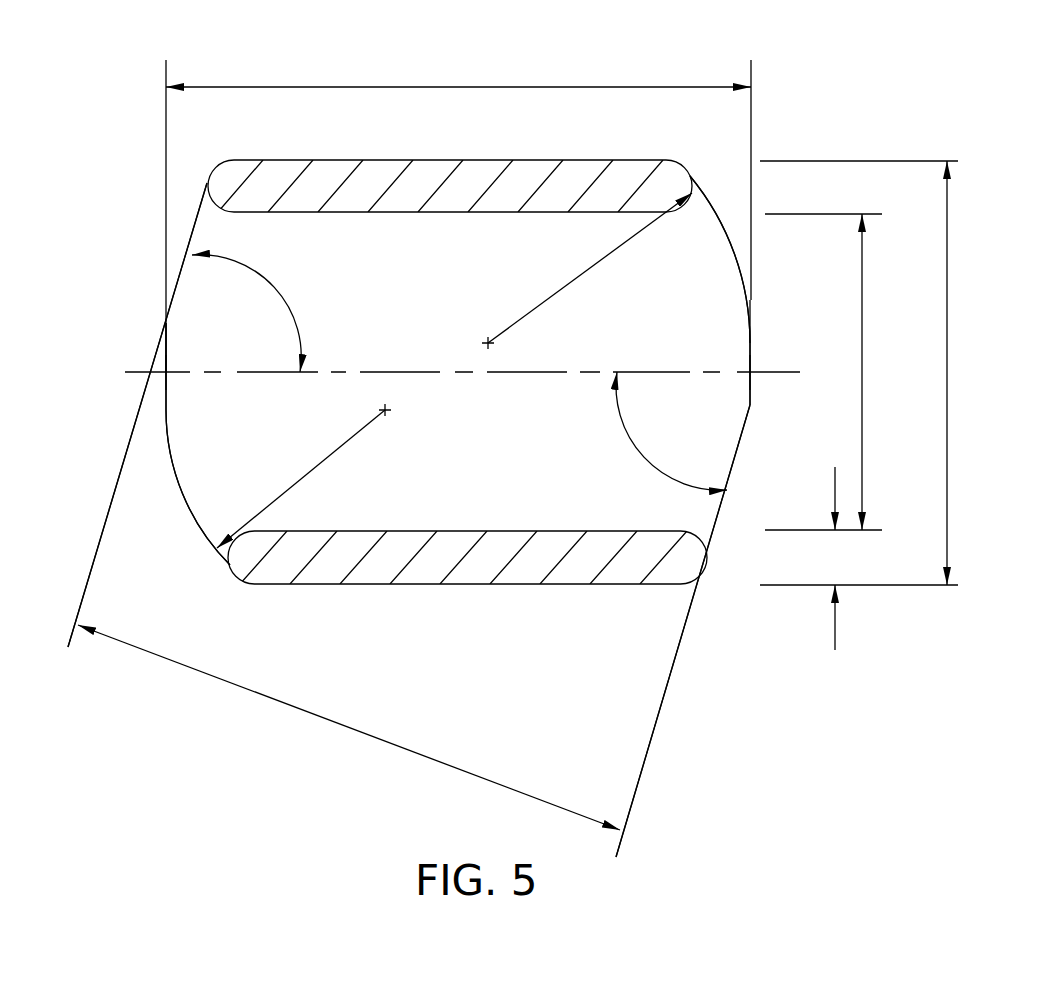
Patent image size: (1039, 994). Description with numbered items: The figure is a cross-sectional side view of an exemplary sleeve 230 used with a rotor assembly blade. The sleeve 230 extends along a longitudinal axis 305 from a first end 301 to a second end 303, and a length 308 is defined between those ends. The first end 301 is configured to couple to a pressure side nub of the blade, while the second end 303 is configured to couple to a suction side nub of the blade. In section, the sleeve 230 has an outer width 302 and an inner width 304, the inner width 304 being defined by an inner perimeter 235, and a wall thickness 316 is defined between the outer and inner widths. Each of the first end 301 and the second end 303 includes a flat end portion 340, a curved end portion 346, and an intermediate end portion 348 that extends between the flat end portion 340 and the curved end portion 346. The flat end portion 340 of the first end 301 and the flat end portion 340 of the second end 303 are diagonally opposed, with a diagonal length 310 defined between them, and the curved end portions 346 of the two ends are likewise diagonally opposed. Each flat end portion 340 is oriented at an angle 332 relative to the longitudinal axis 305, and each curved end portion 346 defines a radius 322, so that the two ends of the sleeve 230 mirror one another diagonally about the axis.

The sleeve 230 is at (787, 117).
The inner perimeter 235 is at (445, 531).
The first end 301 is at (180, 384).
The outer width 302 is at (948, 345).
The second end 303 is at (762, 384).
The inner width 304 is at (862, 378).
The longitudinal axis 305 is at (408, 372).
The length 308 is at (446, 87).
The diagonal length 310 is at (323, 717).
The wall thickness 316 is at (838, 558).
The radius 322 is at (594, 261).
The angle 332 is at (272, 285).
The flat end portion 340 is at (195, 224).
The curved end portion 346 is at (725, 222).
The intermediate end portion 348 is at (166, 356).